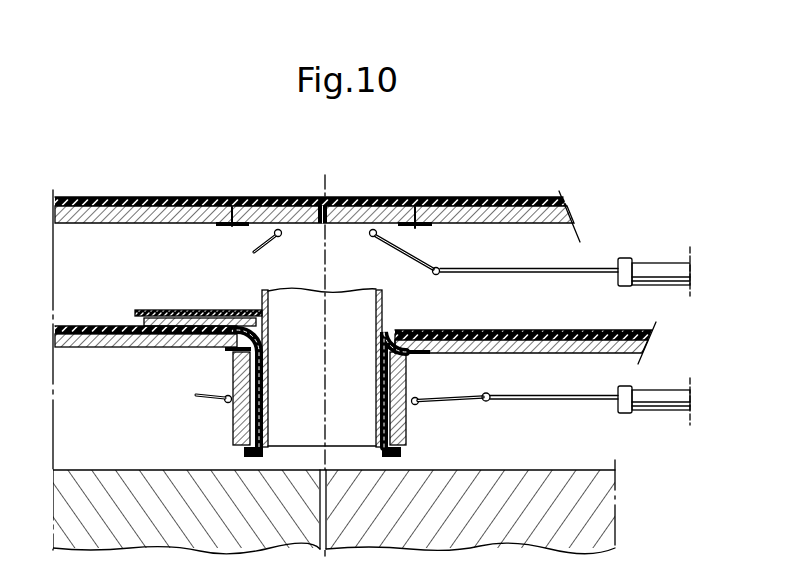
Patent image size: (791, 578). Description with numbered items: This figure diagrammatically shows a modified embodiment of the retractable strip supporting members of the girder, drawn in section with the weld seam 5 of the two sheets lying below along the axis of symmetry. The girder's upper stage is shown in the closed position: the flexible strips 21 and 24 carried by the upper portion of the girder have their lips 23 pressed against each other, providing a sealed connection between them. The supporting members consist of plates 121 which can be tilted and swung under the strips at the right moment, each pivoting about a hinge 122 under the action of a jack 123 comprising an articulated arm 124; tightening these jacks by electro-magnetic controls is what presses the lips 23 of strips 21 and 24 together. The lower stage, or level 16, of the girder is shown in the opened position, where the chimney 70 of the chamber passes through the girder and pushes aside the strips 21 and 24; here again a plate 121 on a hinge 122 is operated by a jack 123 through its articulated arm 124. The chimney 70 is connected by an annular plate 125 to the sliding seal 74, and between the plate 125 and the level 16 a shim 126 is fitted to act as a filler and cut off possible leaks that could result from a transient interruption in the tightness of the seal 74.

The seam 5 is at (328, 471).
The stage of the girder 16 is at (90, 348).
The flexible strip 21 is at (275, 206).
The lips of the strips 23 is at (327, 207).
The flexible strip 24 is at (373, 208).
The chimney 70 is at (269, 351).
The sliding seal 74 is at (122, 323).
The plate 121 is at (250, 210).
The hinge 122 is at (238, 229).
The jack 123 is at (663, 262).
The articulated arm 124 is at (424, 253).
The annular plate 125 is at (170, 311).
The shim 126 is at (228, 320).